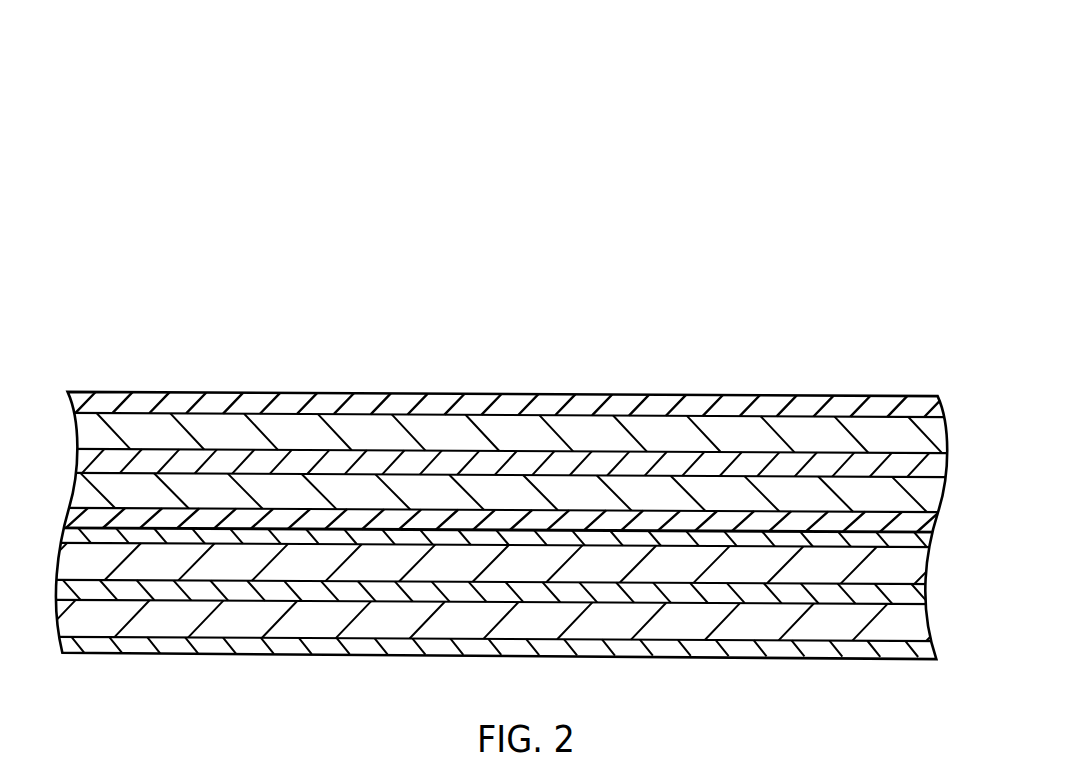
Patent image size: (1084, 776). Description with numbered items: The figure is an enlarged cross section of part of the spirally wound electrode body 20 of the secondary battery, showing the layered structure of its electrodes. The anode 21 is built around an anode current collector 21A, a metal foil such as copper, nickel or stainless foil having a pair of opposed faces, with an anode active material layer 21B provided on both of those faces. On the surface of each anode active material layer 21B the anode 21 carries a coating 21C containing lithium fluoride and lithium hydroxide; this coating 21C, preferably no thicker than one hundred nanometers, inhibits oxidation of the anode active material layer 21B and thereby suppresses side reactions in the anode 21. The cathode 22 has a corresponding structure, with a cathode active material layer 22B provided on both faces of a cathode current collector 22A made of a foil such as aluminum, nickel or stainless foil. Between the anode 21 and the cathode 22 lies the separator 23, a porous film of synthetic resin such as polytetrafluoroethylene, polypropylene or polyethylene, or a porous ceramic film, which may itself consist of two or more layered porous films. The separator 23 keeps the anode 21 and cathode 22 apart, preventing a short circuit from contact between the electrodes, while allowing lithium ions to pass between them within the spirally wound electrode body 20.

The spirally wound electrode body 20 is at (852, 163).
The anode 21 is at (443, 297).
The anode current collector 21A is at (120, 597).
The anode active material layer 21B is at (282, 567).
The coating 21C is at (455, 538).
The cathode 22 is at (777, 298).
The cathode current collector 22A is at (580, 460).
The cathode active material layer 22B is at (765, 423).
The separator 23 is at (885, 410).